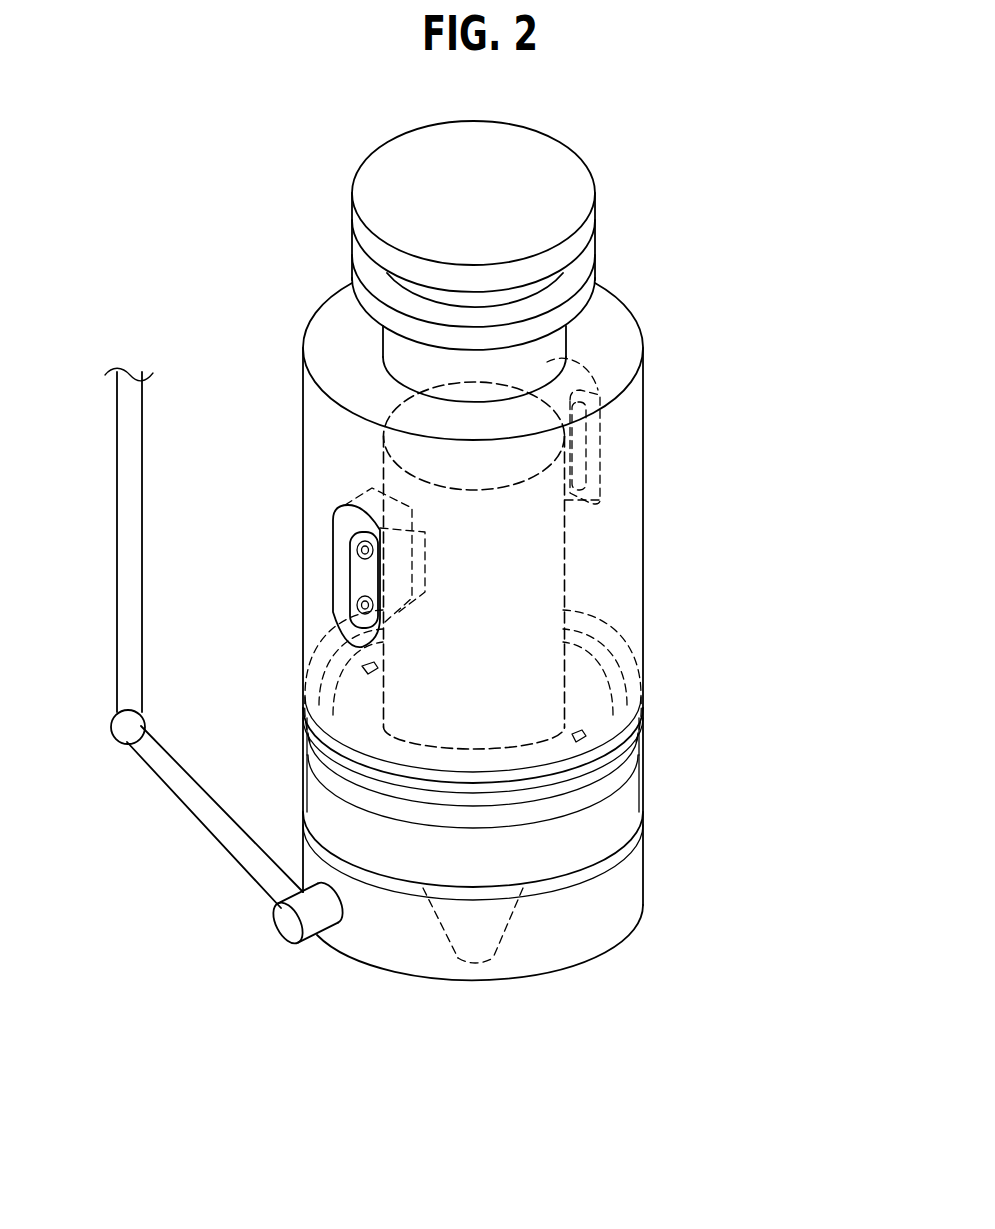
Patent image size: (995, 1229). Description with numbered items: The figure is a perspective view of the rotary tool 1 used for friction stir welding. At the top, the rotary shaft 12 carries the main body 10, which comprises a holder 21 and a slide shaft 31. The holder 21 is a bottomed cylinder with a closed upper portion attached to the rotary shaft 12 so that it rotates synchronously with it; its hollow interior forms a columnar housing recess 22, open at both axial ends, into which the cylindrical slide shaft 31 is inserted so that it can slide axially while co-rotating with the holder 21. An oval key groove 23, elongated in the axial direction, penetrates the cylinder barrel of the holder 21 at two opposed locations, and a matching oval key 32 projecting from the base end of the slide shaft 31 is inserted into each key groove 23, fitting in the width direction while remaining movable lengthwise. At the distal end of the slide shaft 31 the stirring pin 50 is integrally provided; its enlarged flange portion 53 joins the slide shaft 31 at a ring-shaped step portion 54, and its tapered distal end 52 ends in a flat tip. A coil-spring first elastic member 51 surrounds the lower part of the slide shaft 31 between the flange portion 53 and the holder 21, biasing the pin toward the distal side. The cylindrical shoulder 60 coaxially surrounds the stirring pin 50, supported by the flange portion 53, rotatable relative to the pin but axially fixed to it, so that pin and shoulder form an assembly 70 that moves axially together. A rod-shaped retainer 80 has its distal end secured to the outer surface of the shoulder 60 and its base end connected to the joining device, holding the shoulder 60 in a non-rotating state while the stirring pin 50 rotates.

The rotary tool 1 is at (683, 247).
The main body 10 is at (308, 267).
The rotary shaft 12 is at (522, 150).
The holder 21 is at (333, 338).
The housing recess 22 is at (597, 513).
The key groove 23 is at (340, 522).
The slide shaft 31 is at (520, 565).
The key 32 is at (352, 580).
The stirring pin 50 is at (484, 861).
The first elastic member 51 is at (622, 730).
The distal end 52 is at (507, 921).
The flange portion 53 is at (632, 789).
The step portion 54 is at (306, 722).
The shoulder 60 is at (396, 946).
The assembly 70 is at (484, 890).
The retainer 80 is at (220, 825).